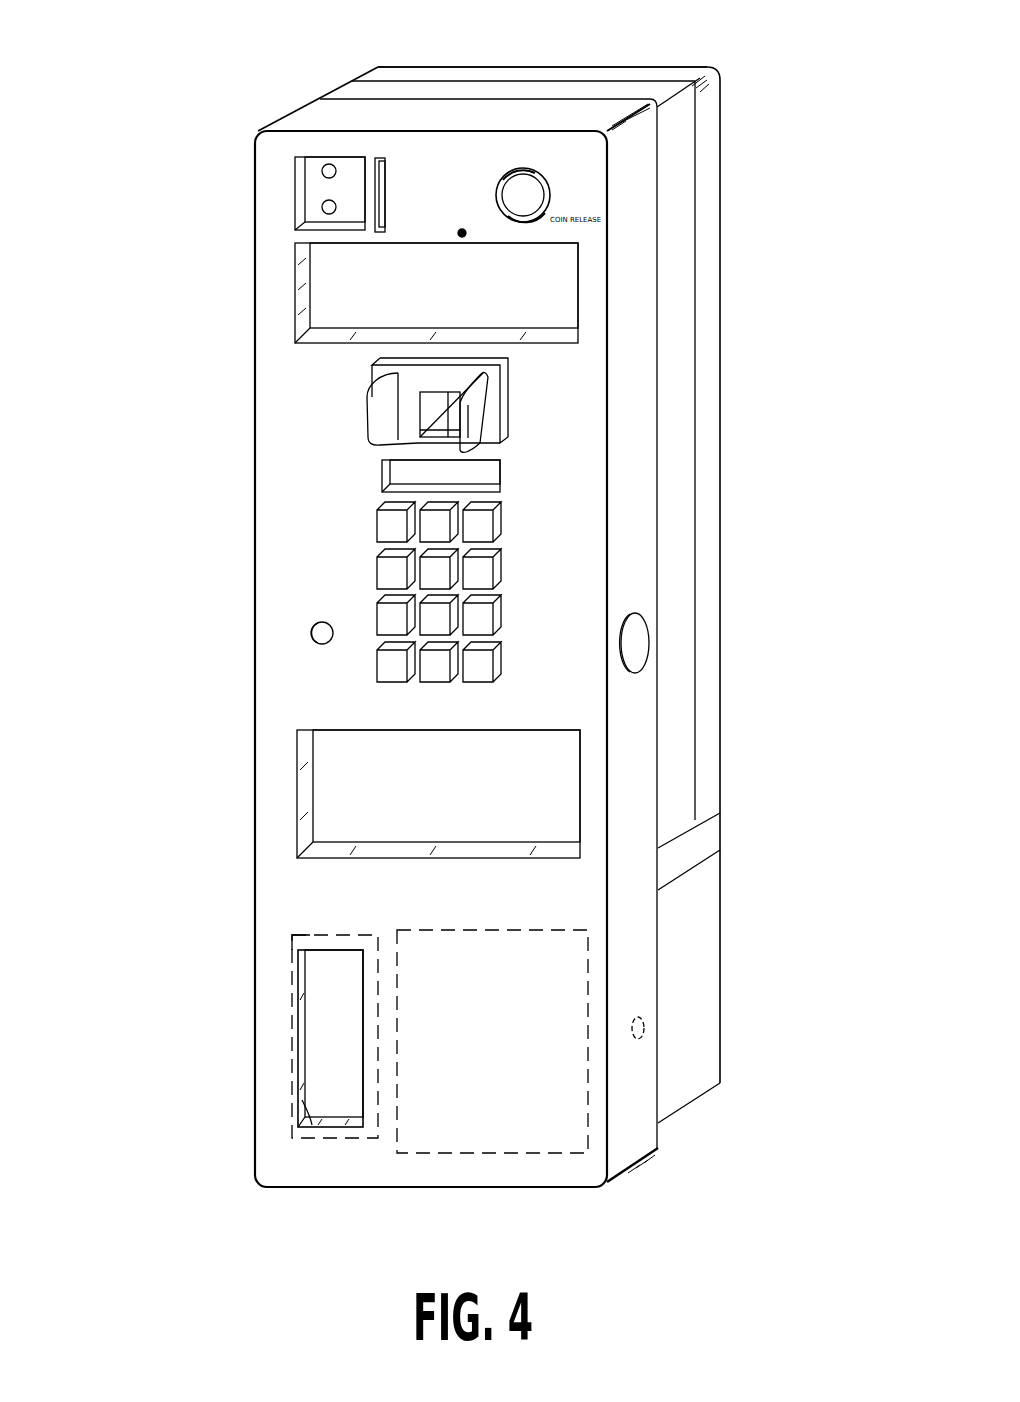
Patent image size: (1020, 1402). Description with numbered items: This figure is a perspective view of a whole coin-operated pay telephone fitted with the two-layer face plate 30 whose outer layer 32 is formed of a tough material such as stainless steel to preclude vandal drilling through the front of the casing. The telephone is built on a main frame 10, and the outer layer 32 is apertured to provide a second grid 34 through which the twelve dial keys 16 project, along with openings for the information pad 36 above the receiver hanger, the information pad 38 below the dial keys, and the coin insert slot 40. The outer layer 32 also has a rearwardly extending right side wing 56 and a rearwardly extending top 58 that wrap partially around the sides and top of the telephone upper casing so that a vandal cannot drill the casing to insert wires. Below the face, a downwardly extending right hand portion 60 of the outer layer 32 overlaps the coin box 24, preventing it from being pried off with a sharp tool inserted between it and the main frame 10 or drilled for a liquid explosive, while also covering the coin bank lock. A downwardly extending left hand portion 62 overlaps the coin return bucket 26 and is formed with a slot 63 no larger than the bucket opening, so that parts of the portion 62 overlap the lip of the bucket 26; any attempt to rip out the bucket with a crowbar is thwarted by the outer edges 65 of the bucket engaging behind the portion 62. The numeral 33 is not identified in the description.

The main frame 10 is at (707, 223).
The dial keys 16 is at (490, 572).
The coin box 24 is at (610, 1182).
The coin return bucket 26 is at (332, 1015).
The two-layer face plate 30 is at (247, 145).
The outer layer 32 is at (461, 425).
The coin slot flap 33 is at (483, 425).
The second grid 34 is at (469, 585).
The information pad 36 is at (460, 310).
The information pad 38 is at (456, 810).
The coin insert slot 40 is at (380, 158).
The right side wing 56 is at (640, 312).
The top 58 is at (562, 113).
The right hand portion 60 is at (598, 988).
The left hand portion 62 is at (277, 1067).
The slot 63 is at (312, 1107).
The outer edges of the bucket 65 is at (287, 947).